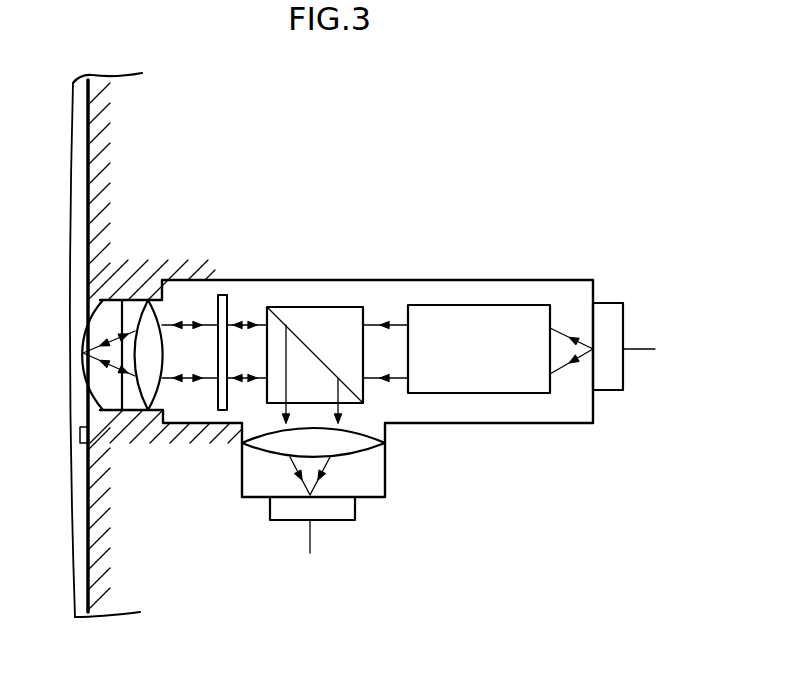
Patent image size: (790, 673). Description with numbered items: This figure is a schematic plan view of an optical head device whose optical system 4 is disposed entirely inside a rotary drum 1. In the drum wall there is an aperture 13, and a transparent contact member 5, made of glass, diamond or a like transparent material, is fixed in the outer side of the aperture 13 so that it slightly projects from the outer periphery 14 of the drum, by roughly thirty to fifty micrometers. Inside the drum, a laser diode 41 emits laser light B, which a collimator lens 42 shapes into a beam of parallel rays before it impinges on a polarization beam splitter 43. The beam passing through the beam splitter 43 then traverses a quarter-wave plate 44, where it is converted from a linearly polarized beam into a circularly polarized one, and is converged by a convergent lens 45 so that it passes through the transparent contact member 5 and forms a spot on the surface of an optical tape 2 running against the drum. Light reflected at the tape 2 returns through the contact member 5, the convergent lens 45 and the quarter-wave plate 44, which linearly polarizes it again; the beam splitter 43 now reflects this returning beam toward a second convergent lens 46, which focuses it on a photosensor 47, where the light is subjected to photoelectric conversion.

The rotary drum 1 is at (165, 110).
The optical tape 2 is at (72, 442).
The optical system 4 is at (385, 245).
The transparent contact member 5 is at (112, 405).
The aperture 13 is at (128, 310).
The outer periphery 14 is at (95, 448).
The laser diode 41 is at (612, 322).
The collimator lens 42 is at (480, 382).
The polarization beam splitter 43 is at (320, 307).
The quarter-wave plate 44 is at (222, 293).
The convergent lens 45 is at (150, 298).
The convergent lens 46 is at (358, 445).
The photosensor 47 is at (333, 515).
The light beam B is at (562, 371).